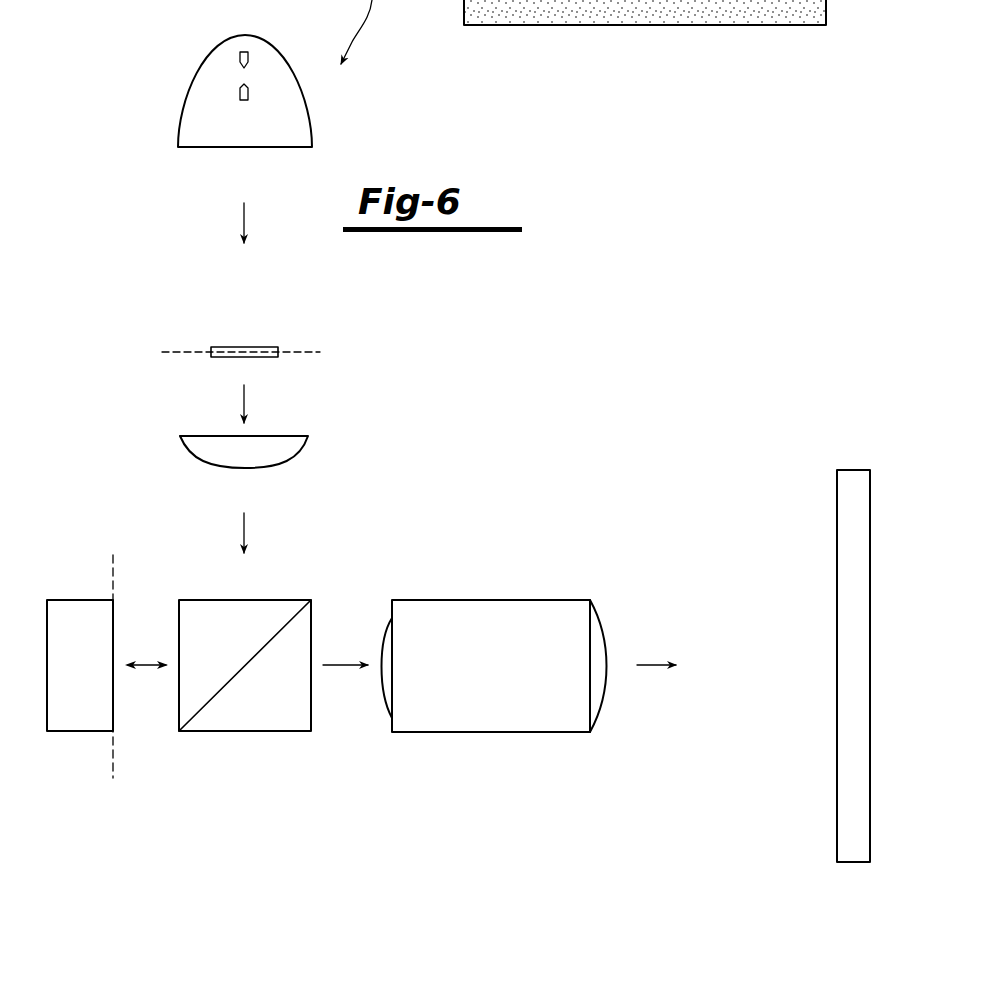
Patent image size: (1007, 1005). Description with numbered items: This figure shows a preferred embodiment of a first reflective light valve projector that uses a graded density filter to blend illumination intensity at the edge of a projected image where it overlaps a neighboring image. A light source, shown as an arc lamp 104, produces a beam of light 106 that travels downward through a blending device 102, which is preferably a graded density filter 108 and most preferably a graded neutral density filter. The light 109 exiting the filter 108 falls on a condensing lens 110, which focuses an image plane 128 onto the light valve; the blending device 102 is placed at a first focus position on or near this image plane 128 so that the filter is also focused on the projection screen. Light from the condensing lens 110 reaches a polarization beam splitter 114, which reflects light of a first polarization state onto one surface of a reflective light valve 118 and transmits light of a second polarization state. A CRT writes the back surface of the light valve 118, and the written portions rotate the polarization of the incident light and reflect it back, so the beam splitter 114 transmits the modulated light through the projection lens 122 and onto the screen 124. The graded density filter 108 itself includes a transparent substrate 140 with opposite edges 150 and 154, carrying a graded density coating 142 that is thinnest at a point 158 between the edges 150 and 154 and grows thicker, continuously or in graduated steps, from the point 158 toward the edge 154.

The blending device 102 is at (279, 374).
The arc lamp 104 is at (278, 51).
The beam of light 106 is at (248, 216).
The graded density filter 108 is at (221, 358).
The light exiting filter 109 is at (242, 396).
The condensing lens 110 is at (303, 450).
The polarization beam splitter 114 is at (262, 600).
The reflective light valve 118 is at (84, 600).
The projection lens 122 is at (480, 600).
The screen 124 is at (837, 570).
The image plane 128 is at (298, 350).
The transparent substrate 140 is at (228, 347).
The graded density coating 142 is at (258, 346).
The edge 150 is at (215, 348).
The edge 154 is at (284, 348).
The point 158 is at (242, 347).